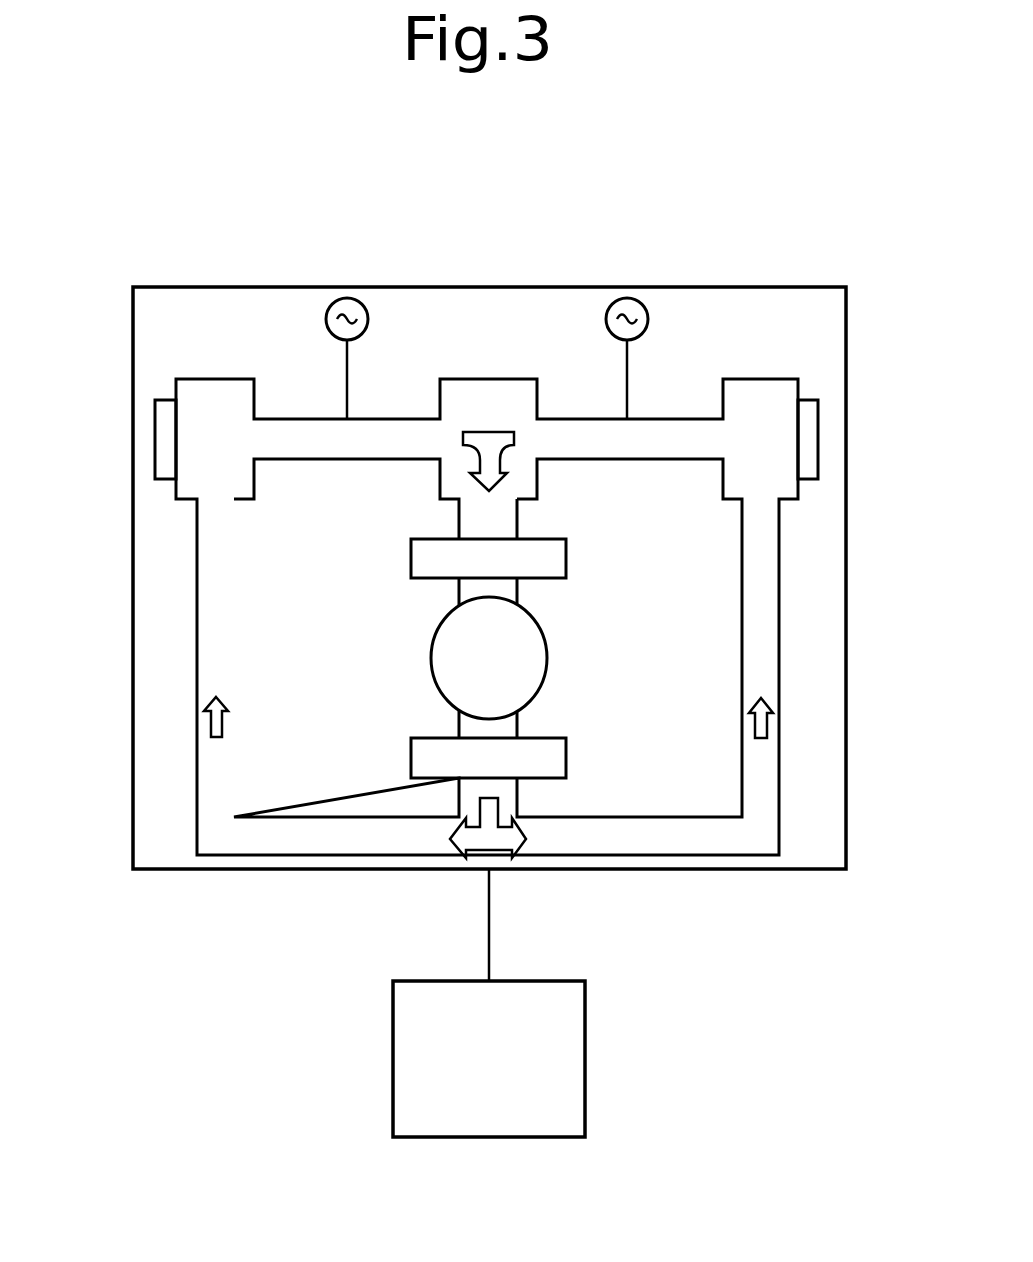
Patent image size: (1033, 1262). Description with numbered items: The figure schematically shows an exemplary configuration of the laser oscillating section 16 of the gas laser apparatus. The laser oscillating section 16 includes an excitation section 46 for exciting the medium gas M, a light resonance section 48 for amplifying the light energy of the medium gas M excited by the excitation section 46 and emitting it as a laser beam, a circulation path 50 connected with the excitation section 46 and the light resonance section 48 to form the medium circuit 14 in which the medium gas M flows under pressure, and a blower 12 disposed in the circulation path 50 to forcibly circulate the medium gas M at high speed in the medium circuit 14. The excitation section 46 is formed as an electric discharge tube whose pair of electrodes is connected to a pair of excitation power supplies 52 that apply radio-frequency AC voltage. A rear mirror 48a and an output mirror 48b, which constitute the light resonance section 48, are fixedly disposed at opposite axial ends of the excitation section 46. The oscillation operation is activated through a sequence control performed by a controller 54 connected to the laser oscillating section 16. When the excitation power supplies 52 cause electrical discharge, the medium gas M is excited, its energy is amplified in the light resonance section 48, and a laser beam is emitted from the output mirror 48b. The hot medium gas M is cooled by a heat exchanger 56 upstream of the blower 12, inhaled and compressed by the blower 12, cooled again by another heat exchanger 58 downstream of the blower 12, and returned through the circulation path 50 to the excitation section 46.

The blower 12 is at (548, 647).
The medium circuit 14 is at (195, 587).
The laser oscillating section 16 is at (578, 287).
The excitation section 46 is at (330, 460).
The light resonance section 48 is at (217, 422).
The rear mirror 48a is at (163, 400).
The output mirror 48b is at (810, 395).
The circulation path 50 is at (770, 625).
The excitation power supplies 52 is at (362, 302).
The controller 54 is at (587, 1032).
The heat exchanger 56 is at (567, 553).
The heat exchanger 58 is at (567, 757).
The medium gas M is at (486, 428).